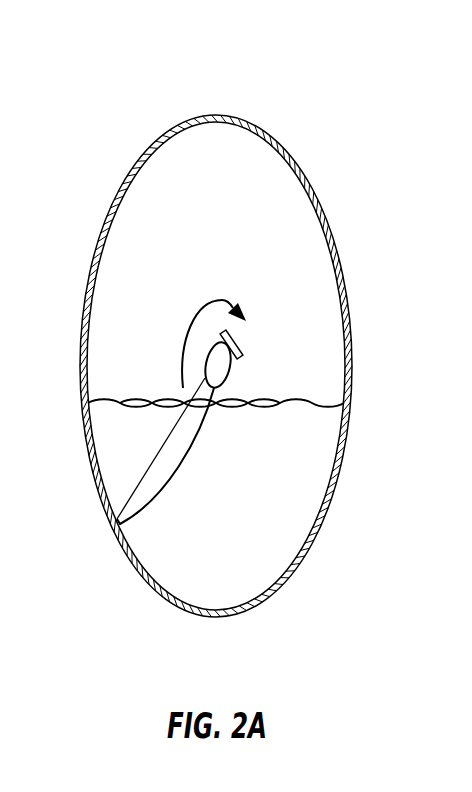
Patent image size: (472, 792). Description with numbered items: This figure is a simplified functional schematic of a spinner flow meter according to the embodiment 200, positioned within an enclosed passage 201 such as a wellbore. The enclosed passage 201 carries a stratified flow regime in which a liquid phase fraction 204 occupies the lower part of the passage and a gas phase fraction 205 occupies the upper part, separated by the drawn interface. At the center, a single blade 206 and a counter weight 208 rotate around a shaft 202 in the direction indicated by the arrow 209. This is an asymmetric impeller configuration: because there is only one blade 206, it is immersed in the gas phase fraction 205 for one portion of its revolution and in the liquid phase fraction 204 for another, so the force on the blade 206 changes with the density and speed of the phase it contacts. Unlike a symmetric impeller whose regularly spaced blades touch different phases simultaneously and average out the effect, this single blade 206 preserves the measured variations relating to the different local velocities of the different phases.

The embodiment 200 is at (106, 108).
The enclosed passage 201 is at (318, 200).
The shaft 202 is at (232, 385).
The liquid phase fraction 204 is at (204, 510).
The gas phase fraction 205 is at (204, 212).
The single blade 206 is at (130, 481).
The counter weight 208 is at (233, 338).
The arrow 209 is at (193, 313).